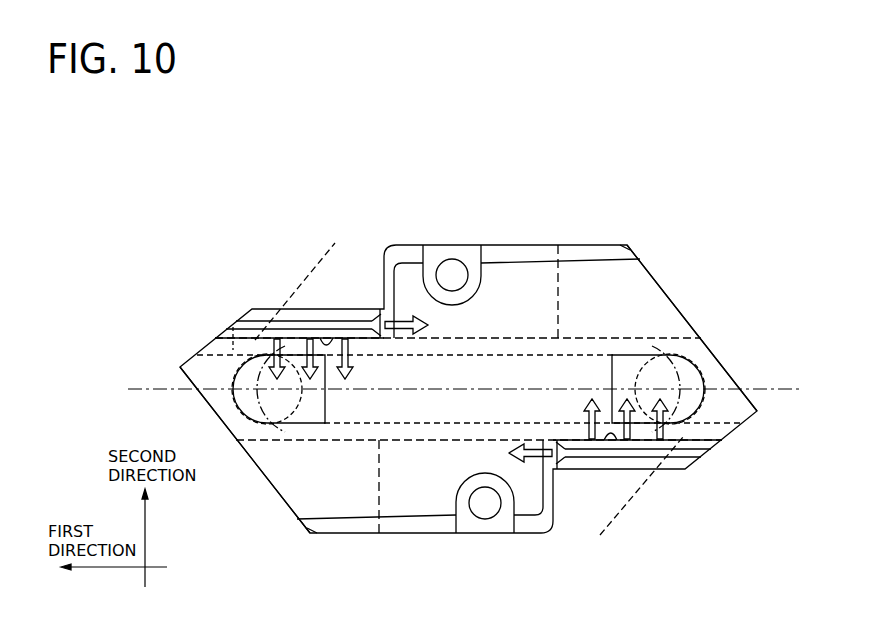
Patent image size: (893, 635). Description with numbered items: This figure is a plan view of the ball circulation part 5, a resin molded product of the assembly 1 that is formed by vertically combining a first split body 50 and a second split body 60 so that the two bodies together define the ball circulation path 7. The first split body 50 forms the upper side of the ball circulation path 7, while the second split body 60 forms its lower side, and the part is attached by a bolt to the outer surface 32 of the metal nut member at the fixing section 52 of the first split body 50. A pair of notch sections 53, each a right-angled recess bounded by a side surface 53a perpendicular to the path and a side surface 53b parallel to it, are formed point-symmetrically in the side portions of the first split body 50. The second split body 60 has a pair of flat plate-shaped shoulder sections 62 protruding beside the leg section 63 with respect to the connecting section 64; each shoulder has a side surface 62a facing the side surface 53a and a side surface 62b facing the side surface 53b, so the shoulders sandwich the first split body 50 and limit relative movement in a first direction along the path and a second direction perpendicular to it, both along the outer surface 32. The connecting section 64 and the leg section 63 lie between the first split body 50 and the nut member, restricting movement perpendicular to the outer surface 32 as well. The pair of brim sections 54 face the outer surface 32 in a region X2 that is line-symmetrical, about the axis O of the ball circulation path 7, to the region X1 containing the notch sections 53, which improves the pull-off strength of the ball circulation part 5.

The wire harness 1 is at (291, 184).
The ball circulation part 5 is at (519, 243).
The ball circulation path 7 is at (511, 378).
The outer surface 32 is at (746, 588).
The first split body 50 is at (420, 246).
The fixing section 52 is at (440, 243).
The notch section 53 is at (282, 301).
The side surface 53a is at (382, 257).
The side surface 53b is at (318, 336).
The brim section 54 is at (641, 248).
The second split body 60 is at (478, 336).
The shoulder section 62 is at (298, 299).
The side surface 62a is at (373, 318).
The side surface 62b is at (342, 321).
The leg section 63 is at (220, 371).
The connecting section 64 is at (437, 440).
The region X1 is at (257, 291).
The region X2 is at (622, 245).
The axis O is at (138, 389).